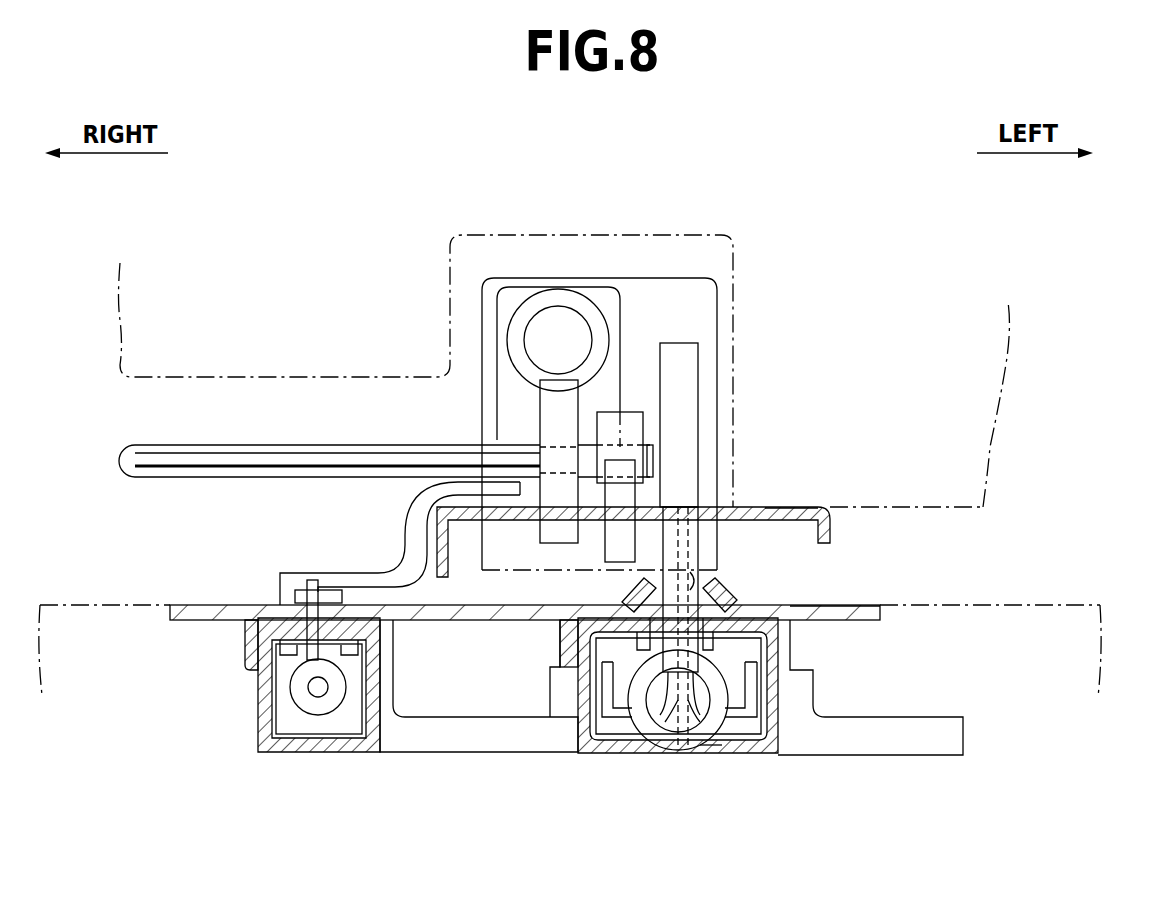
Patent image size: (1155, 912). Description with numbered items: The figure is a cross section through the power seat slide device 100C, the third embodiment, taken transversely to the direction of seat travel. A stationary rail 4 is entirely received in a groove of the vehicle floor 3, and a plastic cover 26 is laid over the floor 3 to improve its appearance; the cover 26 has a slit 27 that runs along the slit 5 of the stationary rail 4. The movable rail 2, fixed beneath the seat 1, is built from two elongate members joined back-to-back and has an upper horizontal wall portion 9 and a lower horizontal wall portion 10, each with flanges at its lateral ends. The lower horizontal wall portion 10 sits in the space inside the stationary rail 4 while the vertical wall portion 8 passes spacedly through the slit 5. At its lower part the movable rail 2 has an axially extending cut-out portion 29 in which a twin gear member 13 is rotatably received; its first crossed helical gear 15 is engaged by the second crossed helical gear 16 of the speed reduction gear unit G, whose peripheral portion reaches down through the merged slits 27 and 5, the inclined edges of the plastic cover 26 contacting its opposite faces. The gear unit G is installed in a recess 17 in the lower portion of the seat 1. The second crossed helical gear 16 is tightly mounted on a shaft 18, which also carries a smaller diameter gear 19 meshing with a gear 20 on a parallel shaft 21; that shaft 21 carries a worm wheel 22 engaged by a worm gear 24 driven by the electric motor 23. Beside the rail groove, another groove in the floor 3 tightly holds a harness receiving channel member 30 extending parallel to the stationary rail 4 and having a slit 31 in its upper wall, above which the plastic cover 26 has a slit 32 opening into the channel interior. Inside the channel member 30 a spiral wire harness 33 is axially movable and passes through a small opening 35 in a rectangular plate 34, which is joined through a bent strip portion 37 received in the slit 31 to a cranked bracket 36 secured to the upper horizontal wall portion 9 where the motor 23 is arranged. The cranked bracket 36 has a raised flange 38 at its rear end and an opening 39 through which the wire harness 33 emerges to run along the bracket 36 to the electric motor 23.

The seat 1 is at (1010, 392).
The movable rail 2 is at (815, 498).
The vehicle floor 3 is at (1003, 606).
The stationary rail 4 is at (787, 708).
The slit 5 is at (710, 600).
The vertical wall portion 8 is at (693, 580).
The upper horizontal wall portion 9 is at (668, 515).
The lower horizontal wall portion 10 is at (623, 727).
The twin gear member 13 is at (580, 733).
The first crossed helical gear 15 is at (627, 728).
The second crossed helical gear 16 is at (687, 343).
The recess 17 is at (605, 235).
The shaft 18 is at (655, 500).
The smaller diameter gear 19 is at (623, 460).
The gear 20 is at (636, 412).
The shaft 21 is at (167, 470).
The worm wheel 22 is at (548, 412).
The electric motor 23 is at (537, 298).
The worm gear 24 is at (540, 330).
The plastic cover 26 is at (820, 607).
The slit 27 is at (765, 510).
The cut-out portion 29 is at (660, 753).
The harness receiving channel member 30 is at (258, 702).
The slit 31 is at (297, 648).
The slit 32 is at (293, 597).
The wire harness 33 is at (335, 720).
The rectangular plate 34 is at (273, 747).
The small opening 35 is at (315, 698).
The cranked bracket 36 is at (400, 527).
The bent strip portion 37 is at (243, 628).
The raised flange 38 is at (367, 499).
The opening 39 is at (312, 587).
The power seat slide device 100C is at (910, 132).
The speed reduction gear unit G is at (680, 278).